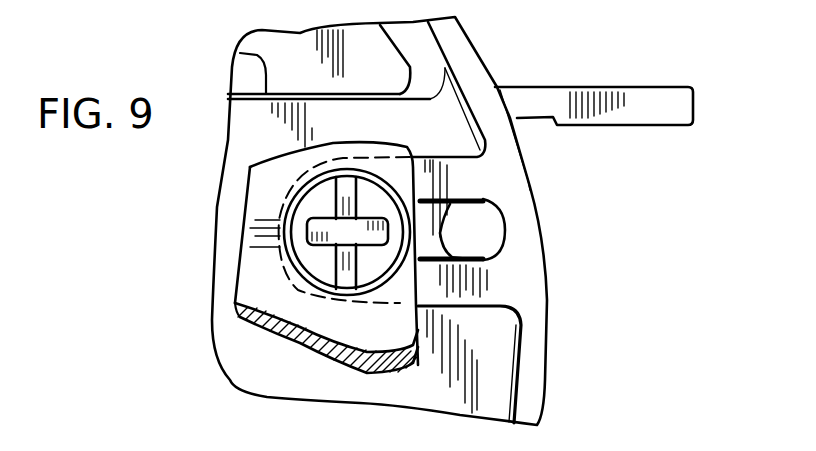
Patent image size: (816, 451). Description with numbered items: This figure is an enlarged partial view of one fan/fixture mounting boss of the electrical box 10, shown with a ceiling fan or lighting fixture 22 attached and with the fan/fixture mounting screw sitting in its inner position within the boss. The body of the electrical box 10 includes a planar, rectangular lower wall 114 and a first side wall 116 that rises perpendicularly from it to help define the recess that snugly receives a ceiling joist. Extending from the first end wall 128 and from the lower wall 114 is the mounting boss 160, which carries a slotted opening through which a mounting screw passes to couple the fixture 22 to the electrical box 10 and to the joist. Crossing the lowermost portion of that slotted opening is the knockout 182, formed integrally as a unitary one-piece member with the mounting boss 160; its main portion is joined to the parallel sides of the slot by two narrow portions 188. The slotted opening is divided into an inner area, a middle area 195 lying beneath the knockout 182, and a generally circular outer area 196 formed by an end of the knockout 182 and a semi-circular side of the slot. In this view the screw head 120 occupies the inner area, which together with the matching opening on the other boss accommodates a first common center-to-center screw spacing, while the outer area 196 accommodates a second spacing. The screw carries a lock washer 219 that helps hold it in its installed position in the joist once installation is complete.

The electrical box 10 is at (637, 58).
The ceiling fan or lighting fixture 22 is at (258, 331).
The lower wall 114 is at (311, 386).
The first side wall 116 is at (240, 53).
The screw head 120 is at (310, 206).
The first end wall 128 is at (547, 388).
The second mounting boss 160 is at (481, 310).
The second knockout 182 is at (500, 213).
The narrow portions 188 is at (413, 198).
The middle area 195 is at (465, 259).
The outer area 196 is at (477, 237).
The lock washer 219 is at (283, 250).